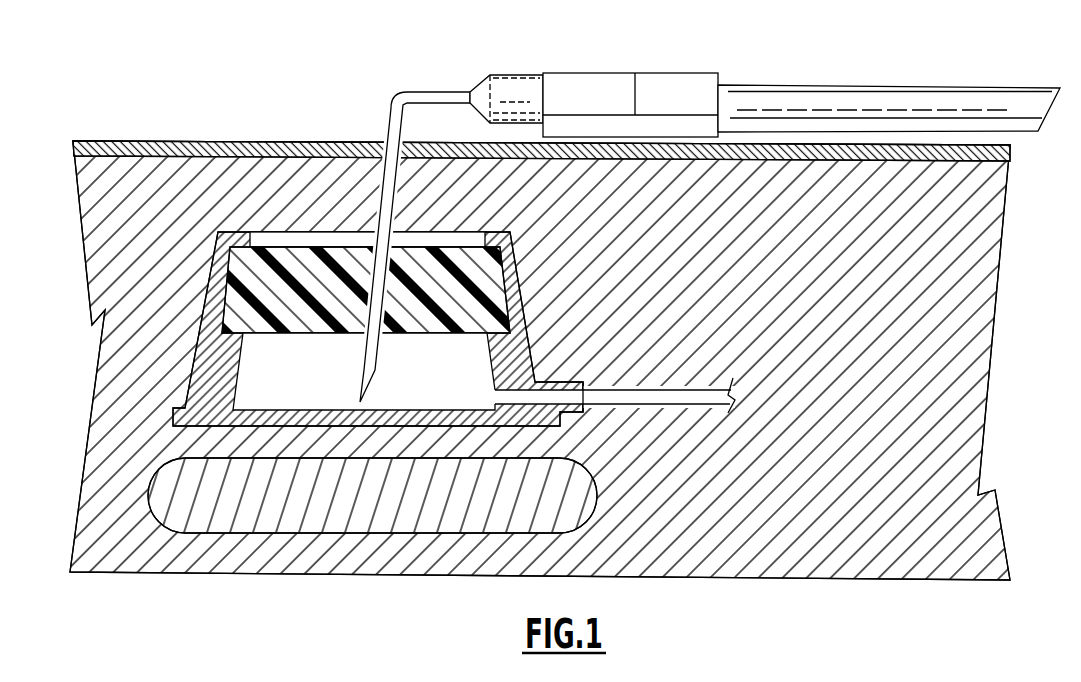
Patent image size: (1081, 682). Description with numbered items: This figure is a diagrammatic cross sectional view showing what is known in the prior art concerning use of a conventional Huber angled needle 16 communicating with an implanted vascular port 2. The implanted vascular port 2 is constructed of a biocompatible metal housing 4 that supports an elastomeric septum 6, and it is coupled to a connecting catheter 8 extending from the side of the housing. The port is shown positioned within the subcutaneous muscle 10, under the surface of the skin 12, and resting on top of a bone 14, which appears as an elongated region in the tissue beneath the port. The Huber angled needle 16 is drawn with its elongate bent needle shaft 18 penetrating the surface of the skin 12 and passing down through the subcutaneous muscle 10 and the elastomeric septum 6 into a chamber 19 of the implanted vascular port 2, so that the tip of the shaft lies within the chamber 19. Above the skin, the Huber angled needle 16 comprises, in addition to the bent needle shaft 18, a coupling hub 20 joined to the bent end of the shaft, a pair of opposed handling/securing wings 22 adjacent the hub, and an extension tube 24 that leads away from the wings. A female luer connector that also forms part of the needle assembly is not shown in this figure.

The implanted vascular port 2 is at (430, 319).
The biocompatible metal housing 4 is at (205, 358).
The elastomeric septum 6 is at (290, 267).
The connecting catheter 8 is at (660, 398).
The subcutaneous muscle 10 is at (110, 207).
The skin 12 is at (99, 142).
The bone 14 is at (162, 487).
The Huber angled needle 16 is at (691, 201).
The bent needle shaft 18 is at (393, 110).
The chamber 19 is at (412, 388).
The coupling hub 20 is at (484, 85).
The handling/securing wings 22 is at (660, 127).
The extension tube 24 is at (883, 97).